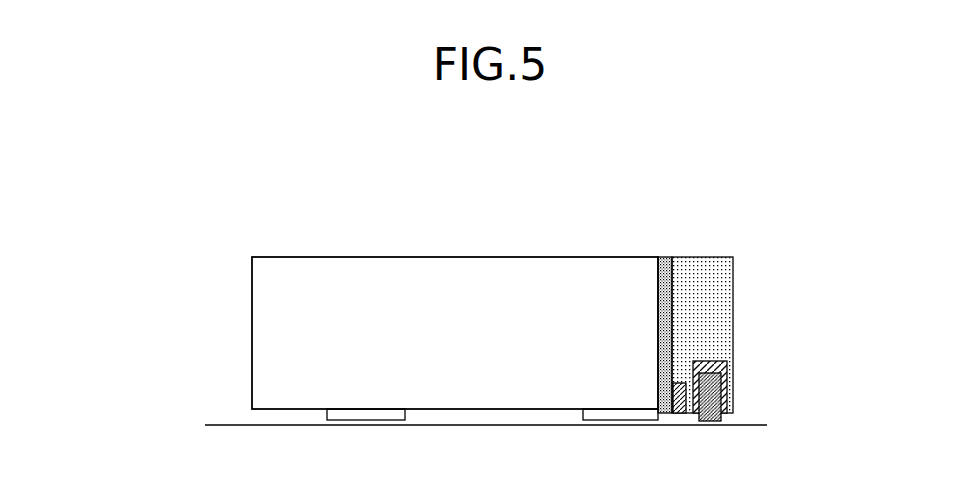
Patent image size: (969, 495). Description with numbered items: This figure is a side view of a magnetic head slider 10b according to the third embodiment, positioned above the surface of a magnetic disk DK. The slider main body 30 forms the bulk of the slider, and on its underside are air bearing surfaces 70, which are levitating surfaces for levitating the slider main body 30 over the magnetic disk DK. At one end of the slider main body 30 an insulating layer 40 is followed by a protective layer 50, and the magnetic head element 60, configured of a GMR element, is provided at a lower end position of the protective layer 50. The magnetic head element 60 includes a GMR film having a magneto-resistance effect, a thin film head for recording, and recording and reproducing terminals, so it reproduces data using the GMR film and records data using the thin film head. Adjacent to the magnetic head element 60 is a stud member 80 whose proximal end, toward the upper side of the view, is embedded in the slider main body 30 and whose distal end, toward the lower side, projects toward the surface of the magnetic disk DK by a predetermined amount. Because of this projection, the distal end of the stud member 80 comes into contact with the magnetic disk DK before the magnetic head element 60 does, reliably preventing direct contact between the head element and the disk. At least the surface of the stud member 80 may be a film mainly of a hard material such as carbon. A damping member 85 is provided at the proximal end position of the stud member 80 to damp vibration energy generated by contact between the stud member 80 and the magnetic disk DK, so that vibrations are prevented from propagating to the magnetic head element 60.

The magnetic head slider 10b is at (533, 215).
The slider main body 30 is at (328, 257).
The insulating layer 40 is at (661, 257).
The protective layer 50 is at (727, 270).
The magnetic head element 60 is at (681, 413).
The air bearing surface 70 is at (358, 420).
The stud member 80 is at (715, 400).
The damping member 85 is at (727, 370).
The magnetic disk DK is at (226, 424).